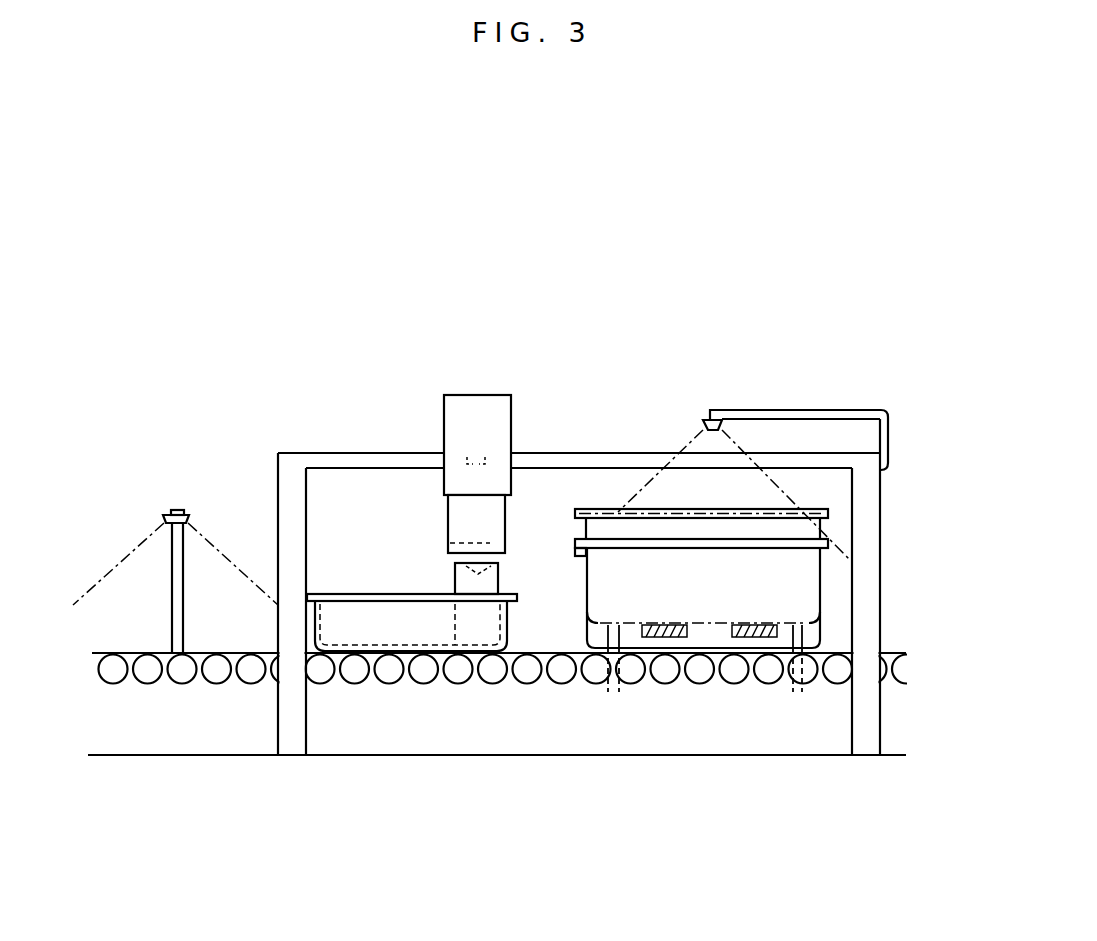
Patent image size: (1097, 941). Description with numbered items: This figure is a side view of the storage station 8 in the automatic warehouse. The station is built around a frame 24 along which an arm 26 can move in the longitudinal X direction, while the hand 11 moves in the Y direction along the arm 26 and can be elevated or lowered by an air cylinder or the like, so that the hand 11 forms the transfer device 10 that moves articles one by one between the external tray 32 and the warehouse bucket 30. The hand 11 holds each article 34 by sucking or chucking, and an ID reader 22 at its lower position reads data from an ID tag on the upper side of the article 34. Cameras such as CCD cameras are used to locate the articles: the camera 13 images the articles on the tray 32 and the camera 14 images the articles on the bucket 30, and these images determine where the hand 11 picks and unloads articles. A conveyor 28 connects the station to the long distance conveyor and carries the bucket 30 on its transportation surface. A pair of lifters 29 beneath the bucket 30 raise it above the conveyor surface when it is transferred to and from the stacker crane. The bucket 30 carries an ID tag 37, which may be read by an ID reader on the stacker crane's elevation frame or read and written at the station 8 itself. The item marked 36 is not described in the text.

The storage station 8 is at (545, 819).
The transfer device 10 is at (382, 453).
The hand 11 is at (448, 512).
The camera 13 is at (186, 515).
The camera 14 is at (705, 419).
The ID reader 22 is at (448, 543).
The frame 24 is at (588, 461).
The arm 26 is at (482, 456).
The conveyor 28 is at (453, 683).
The lifters 29 is at (793, 690).
The bucket 30 is at (806, 598).
The tray 32 is at (510, 623).
The article 34 is at (494, 578).
The outlet 36 is at (498, 568).
The ID tag 37 is at (577, 556).